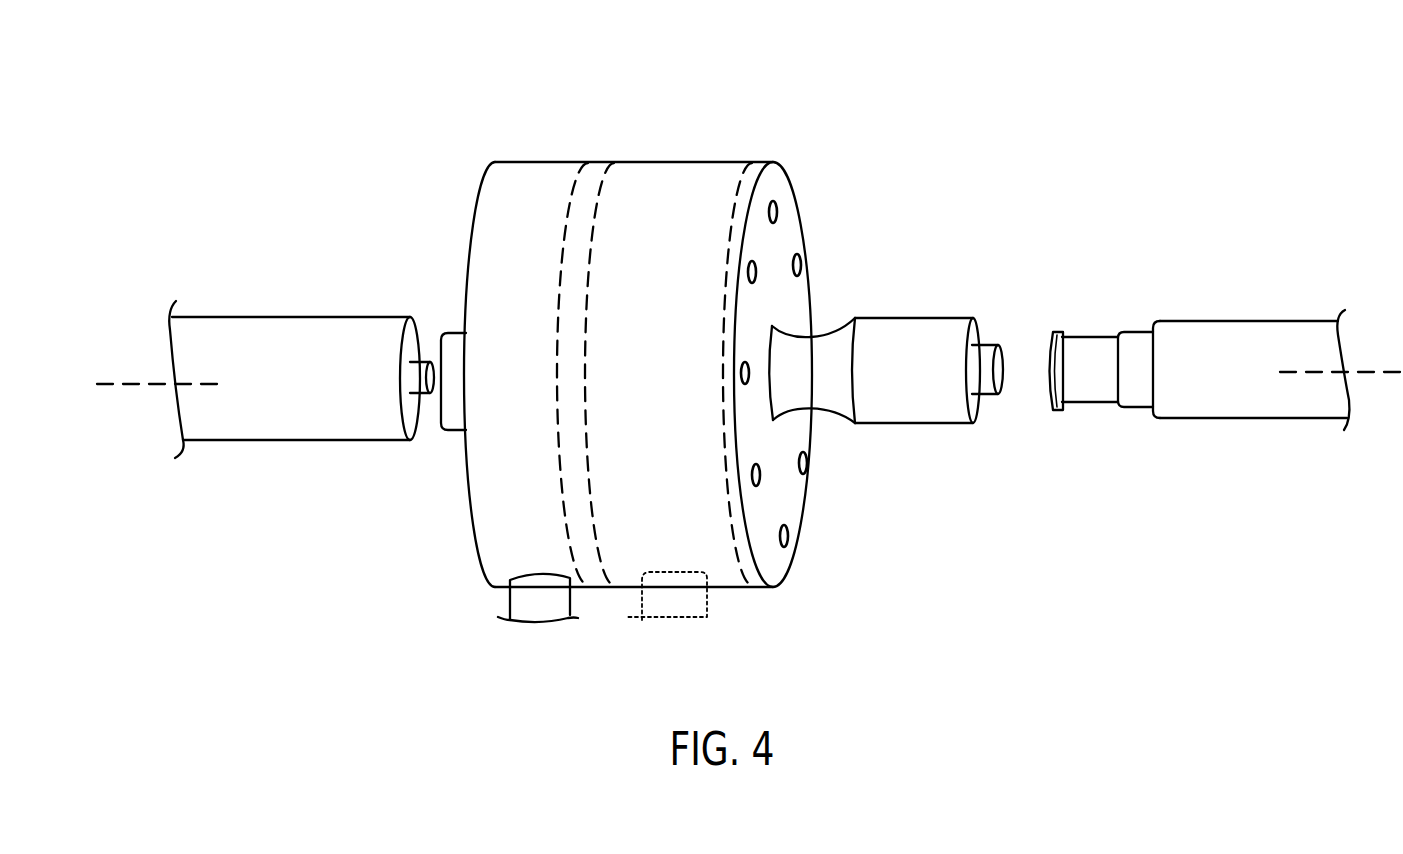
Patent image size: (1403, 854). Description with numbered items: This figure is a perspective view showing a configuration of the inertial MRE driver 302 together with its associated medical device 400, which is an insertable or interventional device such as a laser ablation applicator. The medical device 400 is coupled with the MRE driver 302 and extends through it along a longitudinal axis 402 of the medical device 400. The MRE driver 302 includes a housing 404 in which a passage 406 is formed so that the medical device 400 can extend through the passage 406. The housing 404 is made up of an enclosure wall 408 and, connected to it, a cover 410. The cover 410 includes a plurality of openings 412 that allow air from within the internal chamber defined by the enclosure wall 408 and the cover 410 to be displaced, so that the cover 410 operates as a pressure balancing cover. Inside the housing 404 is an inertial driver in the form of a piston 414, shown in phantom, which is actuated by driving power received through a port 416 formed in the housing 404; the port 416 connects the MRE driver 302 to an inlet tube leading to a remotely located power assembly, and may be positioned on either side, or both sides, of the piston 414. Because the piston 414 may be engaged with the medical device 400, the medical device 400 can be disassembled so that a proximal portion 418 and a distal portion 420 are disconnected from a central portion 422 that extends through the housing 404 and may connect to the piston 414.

The inertial MRE driver 302 is at (450, 199).
The medical device 400 is at (160, 341).
The longitudinal axis 402 is at (1367, 375).
The housing 404 is at (658, 110).
The passage 406 is at (785, 347).
The enclosure wall 408 is at (660, 391).
The cover 410 is at (758, 162).
The openings 412 is at (758, 473).
The piston 414 is at (593, 160).
The port 416 is at (645, 588).
The proximal portion 418 is at (328, 391).
The distal portion 420 is at (1230, 384).
The central portion 422 is at (918, 378).